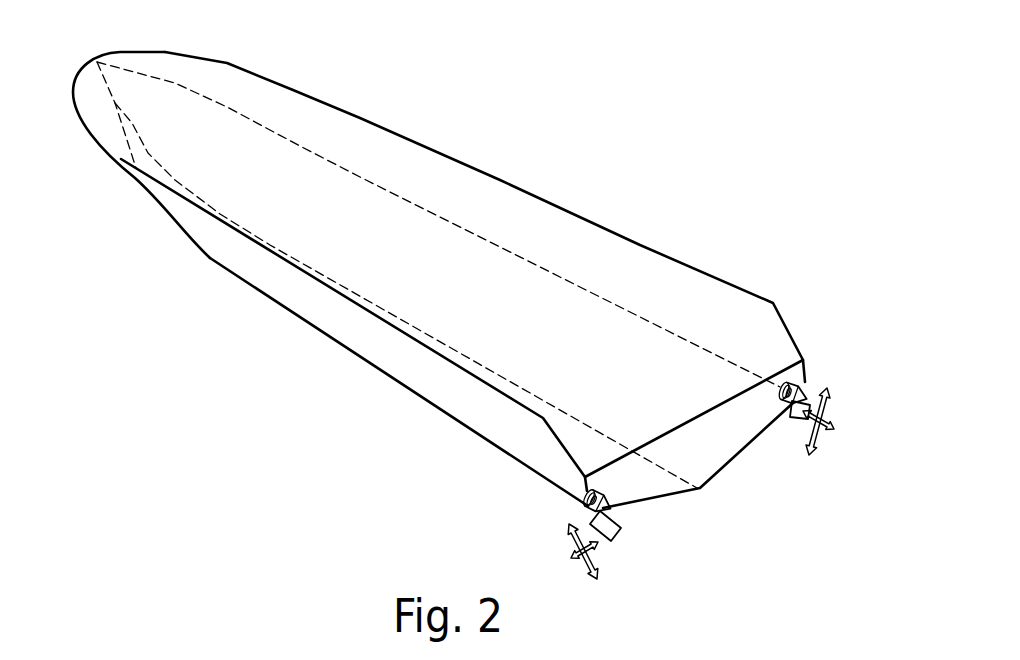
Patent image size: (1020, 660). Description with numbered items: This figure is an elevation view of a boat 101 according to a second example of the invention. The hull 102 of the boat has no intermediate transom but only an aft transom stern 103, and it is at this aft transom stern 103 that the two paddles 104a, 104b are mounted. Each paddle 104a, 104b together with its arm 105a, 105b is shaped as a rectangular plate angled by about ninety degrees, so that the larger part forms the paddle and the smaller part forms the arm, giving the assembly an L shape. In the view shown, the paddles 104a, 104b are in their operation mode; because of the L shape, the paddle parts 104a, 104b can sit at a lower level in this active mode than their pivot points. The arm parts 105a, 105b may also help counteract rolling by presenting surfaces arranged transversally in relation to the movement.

The boat hull 101 is at (572, 138).
The hull 102 is at (507, 443).
The aft transom stern 103 is at (710, 463).
The paddle 104a is at (603, 548).
The paddle 104b is at (820, 428).
The arm 105a is at (618, 515).
The arm 105b is at (792, 417).